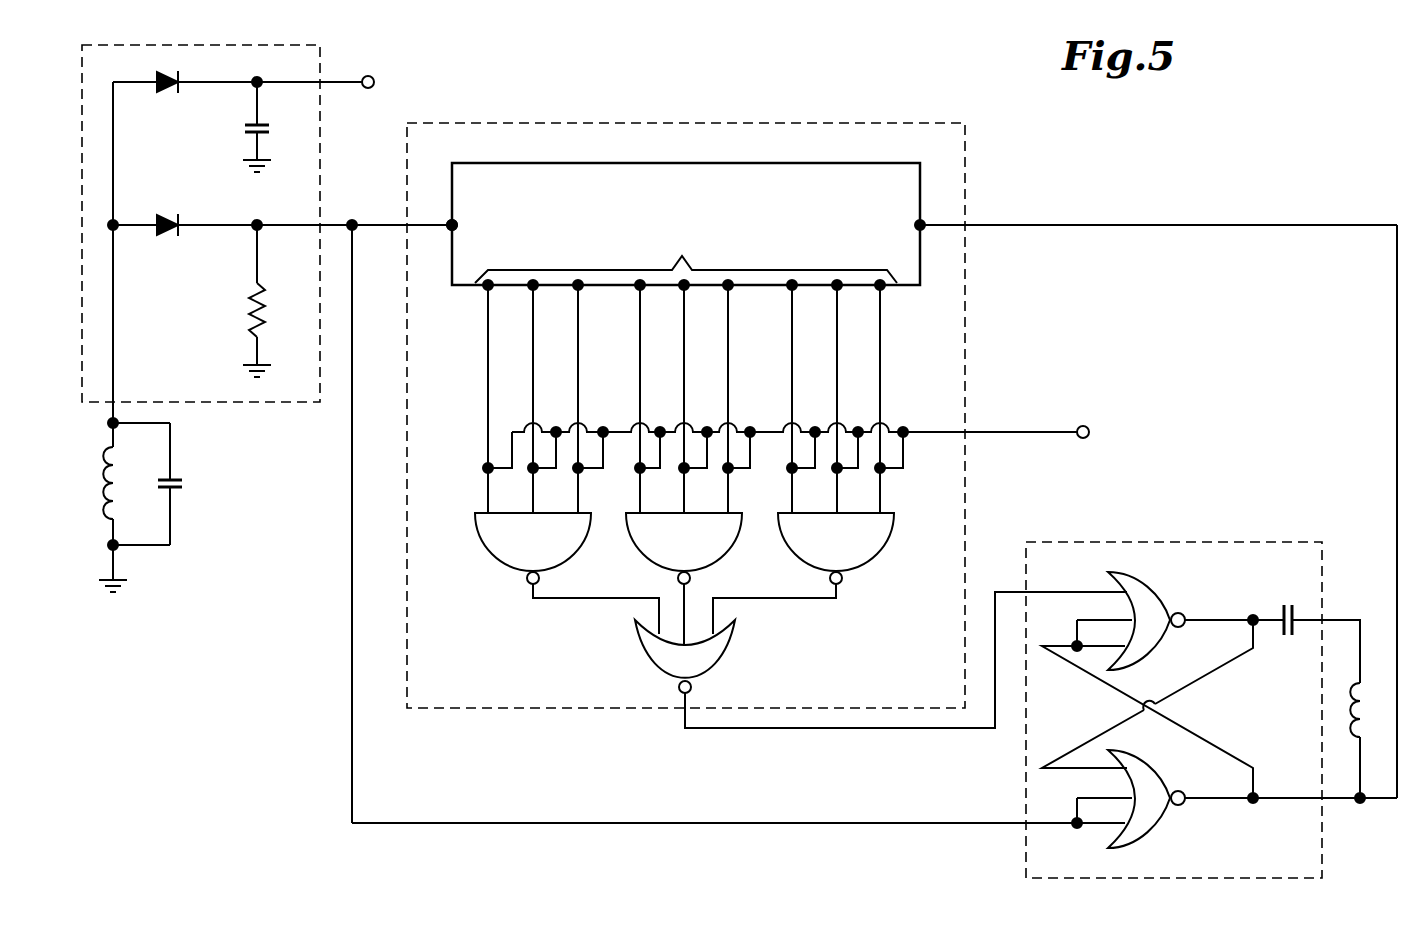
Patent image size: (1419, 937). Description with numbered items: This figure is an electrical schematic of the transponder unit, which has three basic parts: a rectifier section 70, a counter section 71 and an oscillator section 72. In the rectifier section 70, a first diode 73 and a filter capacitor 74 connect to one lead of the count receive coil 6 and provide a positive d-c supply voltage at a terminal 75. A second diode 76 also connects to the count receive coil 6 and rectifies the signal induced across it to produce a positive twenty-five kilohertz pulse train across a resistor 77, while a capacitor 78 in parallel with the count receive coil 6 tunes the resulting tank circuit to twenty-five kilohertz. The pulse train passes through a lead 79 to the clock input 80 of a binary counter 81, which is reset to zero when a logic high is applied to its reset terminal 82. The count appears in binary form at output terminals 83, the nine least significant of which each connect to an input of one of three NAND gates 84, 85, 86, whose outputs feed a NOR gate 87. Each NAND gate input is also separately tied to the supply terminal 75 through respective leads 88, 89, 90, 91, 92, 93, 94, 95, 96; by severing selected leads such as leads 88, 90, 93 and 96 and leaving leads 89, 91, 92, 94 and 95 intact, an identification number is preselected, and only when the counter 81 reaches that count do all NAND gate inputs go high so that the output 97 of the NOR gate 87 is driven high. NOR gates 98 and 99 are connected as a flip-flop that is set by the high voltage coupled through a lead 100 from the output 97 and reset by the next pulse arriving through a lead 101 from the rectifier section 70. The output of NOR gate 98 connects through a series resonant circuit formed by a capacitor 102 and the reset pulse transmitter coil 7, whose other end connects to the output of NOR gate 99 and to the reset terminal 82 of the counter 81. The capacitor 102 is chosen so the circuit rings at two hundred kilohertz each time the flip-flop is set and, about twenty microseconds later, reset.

The count receive coil 6 is at (110, 462).
The reset pulse transmitter coil 7 is at (1366, 705).
The rectifier section 70 is at (282, 410).
The counter section 71 is at (712, 120).
The oscillator section 72 is at (1198, 538).
The first diode 73 is at (166, 70).
The filter capacitor 74 is at (254, 127).
The terminal 75 is at (372, 77).
The second diode 76 is at (166, 213).
The resistor 77 is at (250, 300).
The capacitor 78 is at (178, 492).
The lead 79 is at (332, 220).
The clock input 80 is at (448, 222).
The binary counter 81 is at (785, 162).
The reset terminal 82 is at (922, 222).
The output terminals 83 is at (690, 262).
The NAND gate 84 is at (505, 552).
The NAND gate 85 is at (648, 548).
The NAND gate 86 is at (800, 550).
The NOR gate 87 is at (640, 660).
The lead 88 is at (508, 445).
The lead 89 is at (558, 452).
The lead 90 is at (608, 448).
The lead 91 is at (666, 448).
The lead 92 is at (710, 448).
The lead 93 is at (752, 452).
The lead 94 is at (820, 448).
The lead 95 is at (864, 448).
The lead 96 is at (905, 452).
The output 97 is at (692, 687).
The NOR gate 98 is at (1158, 598).
The NOR gate 99 is at (1158, 780).
The lead 100 is at (1088, 590).
The lead 101 is at (940, 818).
The capacitor 102 is at (1292, 580).